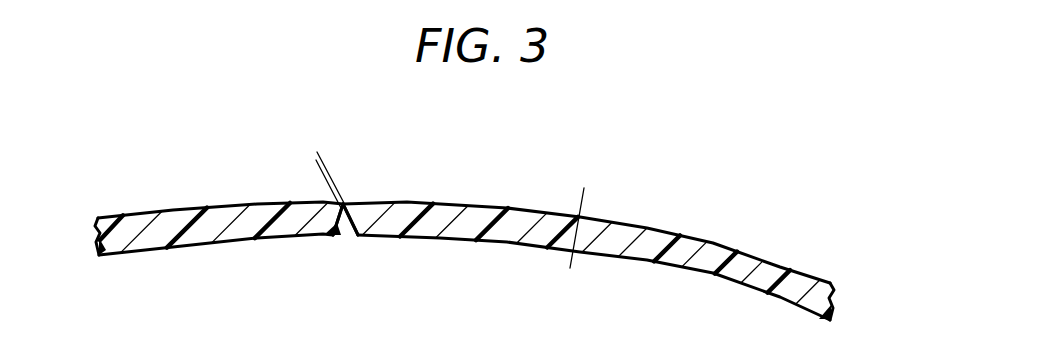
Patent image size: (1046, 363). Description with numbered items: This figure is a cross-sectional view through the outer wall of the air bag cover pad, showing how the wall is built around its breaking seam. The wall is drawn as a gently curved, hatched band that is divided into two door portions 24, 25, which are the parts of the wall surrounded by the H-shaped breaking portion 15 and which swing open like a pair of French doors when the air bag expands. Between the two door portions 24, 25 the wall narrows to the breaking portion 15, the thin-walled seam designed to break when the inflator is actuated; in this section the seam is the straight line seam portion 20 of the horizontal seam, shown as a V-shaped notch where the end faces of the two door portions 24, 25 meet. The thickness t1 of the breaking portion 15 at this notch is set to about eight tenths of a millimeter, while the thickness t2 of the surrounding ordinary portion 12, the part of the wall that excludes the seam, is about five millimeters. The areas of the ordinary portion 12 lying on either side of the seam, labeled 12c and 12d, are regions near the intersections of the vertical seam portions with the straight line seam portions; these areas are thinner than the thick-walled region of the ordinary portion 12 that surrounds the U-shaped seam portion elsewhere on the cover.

The ordinary portion 12 is at (464, 222).
The ordinary portion area 12c is at (378, 217).
The ordinary portion area 12d is at (328, 231).
The breaking portion 15 is at (381, 190).
The straight line seam portion 20 is at (343, 205).
The door portion 24 is at (695, 230).
The door portion 25 is at (178, 206).
The thickness of breaking portion t1 is at (323, 180).
The thickness of ordinary portion t2 is at (584, 215).